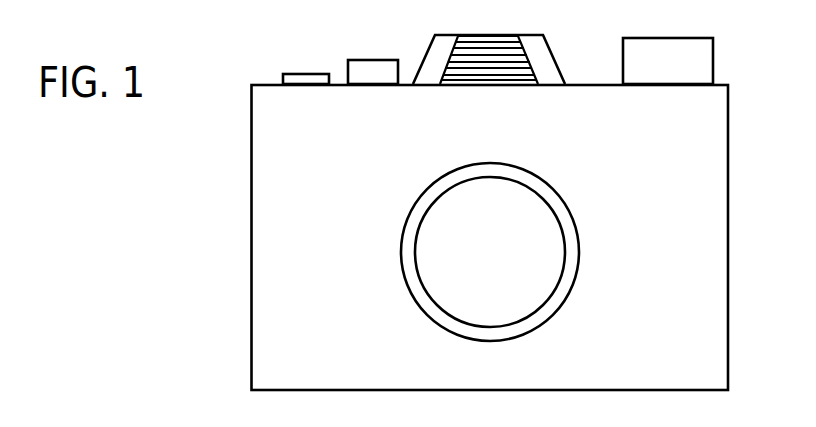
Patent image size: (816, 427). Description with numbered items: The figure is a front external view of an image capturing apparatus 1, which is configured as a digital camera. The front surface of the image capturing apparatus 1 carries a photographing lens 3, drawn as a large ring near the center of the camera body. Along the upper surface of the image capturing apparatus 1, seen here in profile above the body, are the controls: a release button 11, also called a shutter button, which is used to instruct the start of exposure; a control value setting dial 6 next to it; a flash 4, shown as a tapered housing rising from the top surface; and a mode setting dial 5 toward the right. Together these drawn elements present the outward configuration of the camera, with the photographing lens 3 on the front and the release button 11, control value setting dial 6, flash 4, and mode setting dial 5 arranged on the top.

The image capturing apparatus 1 is at (172, 150).
The photographing lens 3 is at (580, 252).
The flash 4 is at (561, 58).
The mode setting dial 5 is at (713, 60).
The control value setting dial 6 is at (375, 60).
The release button 11 is at (304, 74).